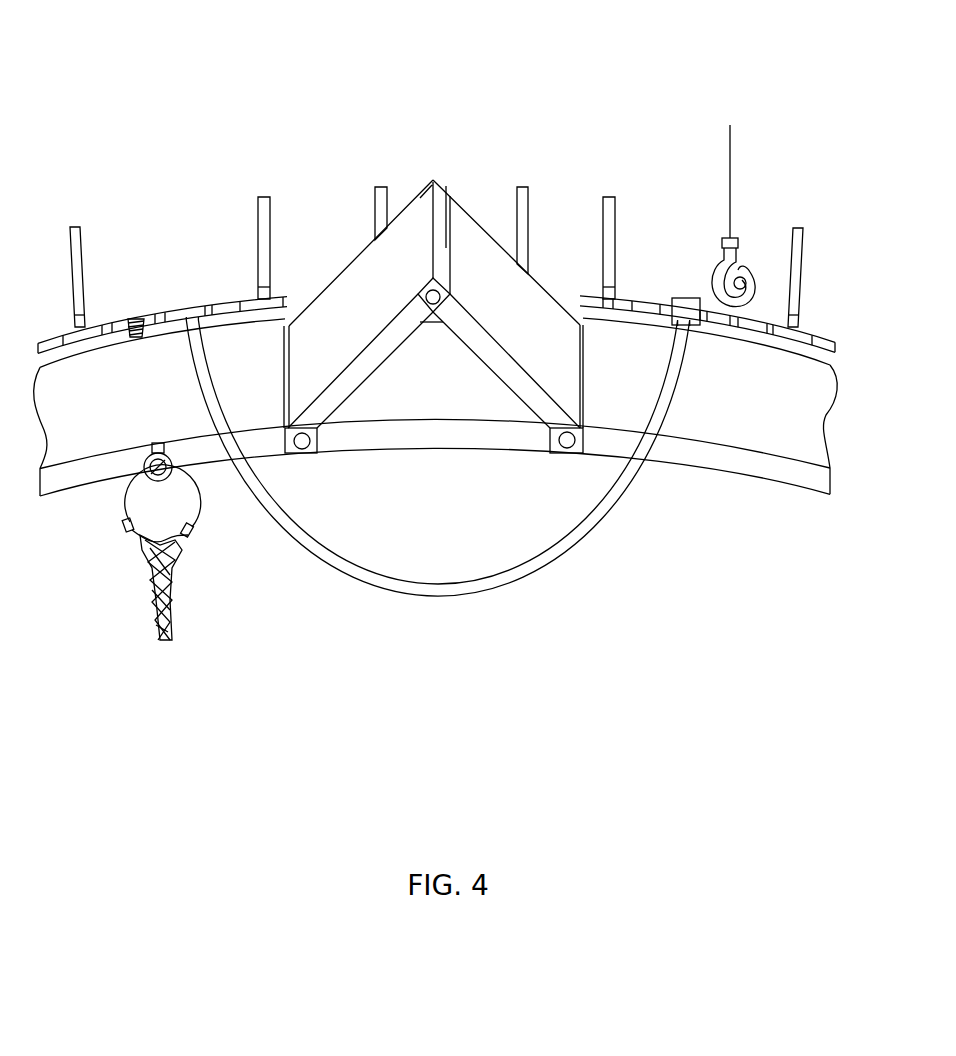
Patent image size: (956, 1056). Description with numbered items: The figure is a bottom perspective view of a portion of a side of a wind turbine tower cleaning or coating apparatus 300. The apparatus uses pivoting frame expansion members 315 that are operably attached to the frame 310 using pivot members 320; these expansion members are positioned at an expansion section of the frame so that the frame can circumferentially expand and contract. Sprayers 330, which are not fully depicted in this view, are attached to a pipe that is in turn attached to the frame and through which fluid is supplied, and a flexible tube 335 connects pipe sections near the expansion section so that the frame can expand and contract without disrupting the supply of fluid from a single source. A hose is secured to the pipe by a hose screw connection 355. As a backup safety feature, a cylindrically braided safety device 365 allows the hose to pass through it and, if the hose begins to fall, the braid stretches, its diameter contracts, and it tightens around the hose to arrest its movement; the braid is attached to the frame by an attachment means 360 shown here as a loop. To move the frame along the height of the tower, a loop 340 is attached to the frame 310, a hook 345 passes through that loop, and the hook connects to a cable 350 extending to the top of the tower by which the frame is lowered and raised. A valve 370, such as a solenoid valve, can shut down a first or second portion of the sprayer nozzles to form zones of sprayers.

The wind turbine tower cleaning or coating apparatus 300 is at (250, 98).
The frame 310 is at (735, 458).
The pivoting frame expansion members 315 is at (370, 360).
The pivot members 320 is at (302, 455).
The sprayers 330 is at (260, 213).
The tube 335 is at (440, 596).
The loop 340 is at (703, 300).
The hook 345 is at (737, 255).
The cable 350 is at (730, 172).
The hose screw connection 355 is at (127, 319).
The attachment means 360 is at (145, 445).
The cylindrically braided safety device 365 is at (168, 588).
The valve 370 is at (672, 312).